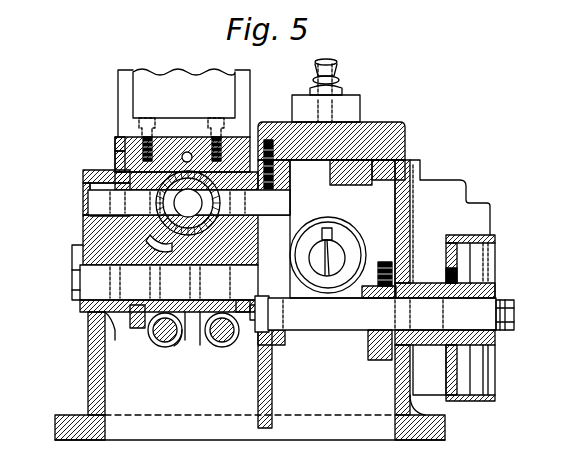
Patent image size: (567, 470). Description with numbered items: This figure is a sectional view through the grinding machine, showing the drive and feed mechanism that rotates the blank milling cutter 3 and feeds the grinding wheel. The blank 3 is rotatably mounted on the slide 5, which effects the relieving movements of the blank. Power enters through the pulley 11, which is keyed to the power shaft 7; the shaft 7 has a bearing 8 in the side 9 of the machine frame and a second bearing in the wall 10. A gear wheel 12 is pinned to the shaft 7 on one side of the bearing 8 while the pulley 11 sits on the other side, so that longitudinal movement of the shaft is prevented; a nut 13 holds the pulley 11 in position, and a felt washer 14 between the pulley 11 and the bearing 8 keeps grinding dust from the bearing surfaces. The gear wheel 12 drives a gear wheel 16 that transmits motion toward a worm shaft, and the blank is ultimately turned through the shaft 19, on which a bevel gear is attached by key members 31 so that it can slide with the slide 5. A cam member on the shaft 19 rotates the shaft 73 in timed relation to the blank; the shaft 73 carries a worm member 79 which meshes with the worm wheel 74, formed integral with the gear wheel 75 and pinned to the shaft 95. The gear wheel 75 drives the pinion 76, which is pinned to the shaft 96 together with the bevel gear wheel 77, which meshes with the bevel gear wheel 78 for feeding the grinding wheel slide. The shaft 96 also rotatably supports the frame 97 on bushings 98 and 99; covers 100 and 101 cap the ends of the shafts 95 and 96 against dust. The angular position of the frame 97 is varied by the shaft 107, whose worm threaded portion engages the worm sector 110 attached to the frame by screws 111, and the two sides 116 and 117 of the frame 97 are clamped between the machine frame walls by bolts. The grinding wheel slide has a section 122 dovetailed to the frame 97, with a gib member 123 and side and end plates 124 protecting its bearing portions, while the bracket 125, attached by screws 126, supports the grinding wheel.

The blank milling cutter 3 is at (335, 72).
The slide 5 is at (390, 122).
The power shaft 7 is at (330, 324).
The bearing 8 is at (426, 285).
The side of the frame 9 is at (412, 232).
The wall 10 is at (272, 405).
The pulley 11 is at (495, 236).
The gear wheel 12 is at (384, 262).
The nut 13 is at (505, 300).
The felt washer 14 is at (452, 275).
The gear wheel 16 is at (370, 358).
The shaft 19 is at (340, 252).
The key members 31 is at (332, 246).
The shaft 73 is at (158, 345).
The worm wheel 74 is at (207, 338).
The gear wheel 75 is at (138, 328).
The pinion 76 is at (112, 168).
The bevel gear wheel 77 is at (205, 218).
The bevel gear wheel 78 is at (190, 236).
The worm member 79 is at (182, 340).
The shaft 95 is at (95, 278).
The shaft 96 is at (88, 196).
The frame 97 is at (95, 330).
The bushing 98 is at (95, 205).
The bushing 99 is at (252, 200).
The cover 100 is at (72, 270).
The cover 101 is at (100, 213).
The shaft 107 is at (212, 342).
The worm sector 110 is at (243, 315).
The screws 111 is at (254, 318).
The side of the frame 116 is at (92, 308).
The side of the frame 117 is at (286, 232).
The section 122 is at (162, 150).
The gib member 123 is at (118, 140).
The side and end plates 124 is at (118, 153).
The bracket 125 is at (250, 92).
The screws 126 is at (215, 118).